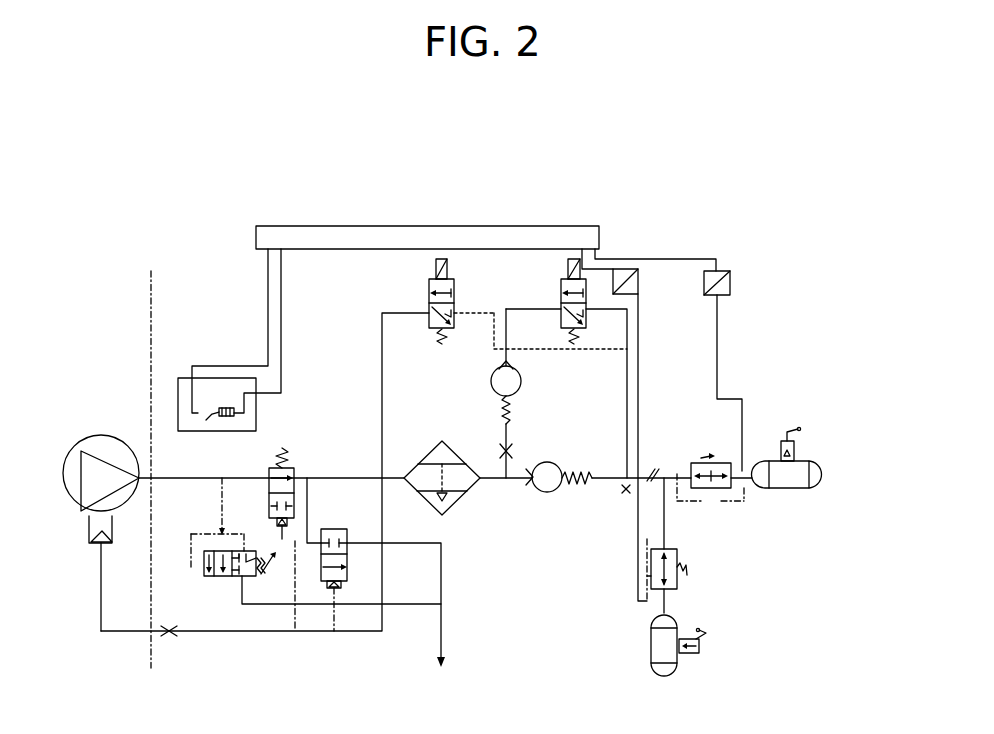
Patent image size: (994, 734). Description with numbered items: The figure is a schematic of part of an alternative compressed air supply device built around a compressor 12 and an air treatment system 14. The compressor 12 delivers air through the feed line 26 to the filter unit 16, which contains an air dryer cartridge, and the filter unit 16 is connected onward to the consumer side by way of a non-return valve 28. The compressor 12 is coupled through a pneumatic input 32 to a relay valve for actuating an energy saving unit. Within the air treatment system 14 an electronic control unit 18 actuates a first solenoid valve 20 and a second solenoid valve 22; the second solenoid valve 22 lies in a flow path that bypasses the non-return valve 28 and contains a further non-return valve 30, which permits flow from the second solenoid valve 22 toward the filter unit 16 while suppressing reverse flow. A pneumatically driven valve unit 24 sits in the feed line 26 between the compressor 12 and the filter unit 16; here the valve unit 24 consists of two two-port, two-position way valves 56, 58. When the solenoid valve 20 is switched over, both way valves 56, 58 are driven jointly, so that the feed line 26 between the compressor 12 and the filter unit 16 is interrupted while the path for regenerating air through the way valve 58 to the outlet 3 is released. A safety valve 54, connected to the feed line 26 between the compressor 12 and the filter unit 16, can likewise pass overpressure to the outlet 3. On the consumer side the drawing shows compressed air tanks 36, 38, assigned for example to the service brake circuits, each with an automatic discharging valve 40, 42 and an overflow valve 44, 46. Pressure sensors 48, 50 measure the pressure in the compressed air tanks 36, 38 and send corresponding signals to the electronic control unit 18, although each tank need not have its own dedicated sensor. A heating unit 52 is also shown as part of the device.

The outlet 3 is at (448, 662).
The compressor 12 is at (90, 433).
The air treatment system 14 is at (152, 660).
The filter unit 16 is at (460, 500).
The electronic control unit 18 is at (512, 230).
The first solenoid valve 20 is at (445, 257).
The second solenoid valve 22 is at (575, 257).
The valve unit 24 is at (303, 573).
The feed line 26 is at (188, 483).
The non-return valve 28 is at (556, 491).
The non-return valve 30 is at (522, 366).
The pneumatic input 32 is at (88, 533).
The compressed air tank 36 is at (655, 647).
The compressed air tank 38 is at (800, 485).
The automatic discharging valve 40 is at (700, 652).
The automatic discharging valve 42 is at (795, 450).
The overflow valve 44 is at (672, 583).
The overflow valve 46 is at (697, 461).
The pressure sensor 48 is at (641, 286).
The pressure sensor 50 is at (748, 284).
The heating unit 52 is at (258, 412).
The safety valve 54 is at (212, 577).
The 2/2 way valve 56 is at (297, 468).
The 2/2 way valve 58 is at (337, 528).